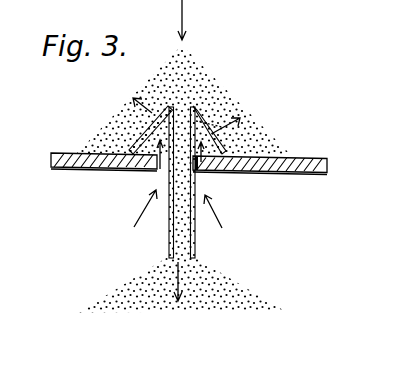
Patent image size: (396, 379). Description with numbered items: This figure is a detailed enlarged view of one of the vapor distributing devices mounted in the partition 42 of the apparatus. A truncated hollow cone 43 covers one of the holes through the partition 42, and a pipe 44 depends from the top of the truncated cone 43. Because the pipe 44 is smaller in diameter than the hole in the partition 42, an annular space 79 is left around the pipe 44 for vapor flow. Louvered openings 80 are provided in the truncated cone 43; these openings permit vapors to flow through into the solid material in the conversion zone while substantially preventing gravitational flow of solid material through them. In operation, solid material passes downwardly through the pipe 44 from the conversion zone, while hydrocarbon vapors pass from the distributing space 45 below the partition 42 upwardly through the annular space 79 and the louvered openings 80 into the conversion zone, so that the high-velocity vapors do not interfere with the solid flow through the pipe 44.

The partition 42 is at (297, 171).
The truncated hollow cone 43 is at (208, 117).
The pipe 44 is at (168, 240).
The distributing space 45 is at (125, 202).
The annular space 79 is at (200, 168).
The louvered openings 80 is at (145, 148).